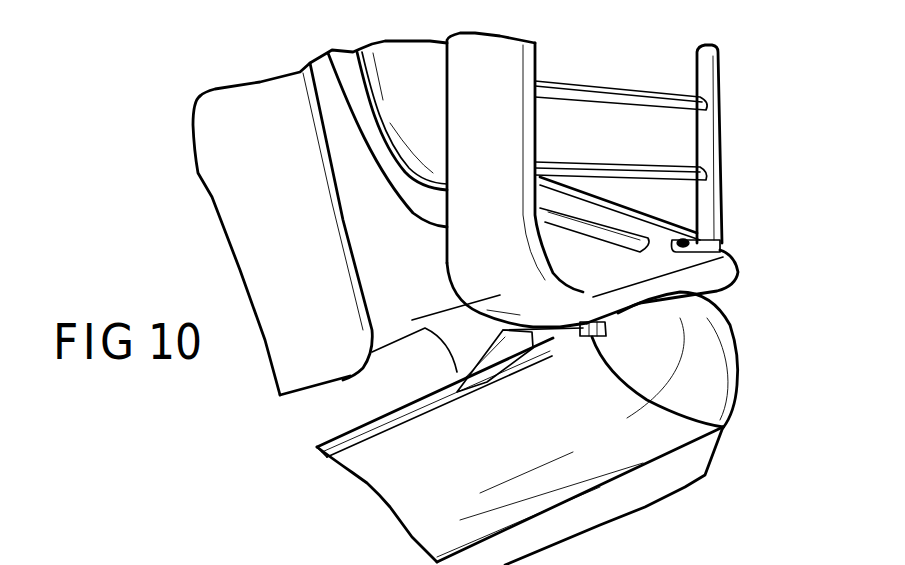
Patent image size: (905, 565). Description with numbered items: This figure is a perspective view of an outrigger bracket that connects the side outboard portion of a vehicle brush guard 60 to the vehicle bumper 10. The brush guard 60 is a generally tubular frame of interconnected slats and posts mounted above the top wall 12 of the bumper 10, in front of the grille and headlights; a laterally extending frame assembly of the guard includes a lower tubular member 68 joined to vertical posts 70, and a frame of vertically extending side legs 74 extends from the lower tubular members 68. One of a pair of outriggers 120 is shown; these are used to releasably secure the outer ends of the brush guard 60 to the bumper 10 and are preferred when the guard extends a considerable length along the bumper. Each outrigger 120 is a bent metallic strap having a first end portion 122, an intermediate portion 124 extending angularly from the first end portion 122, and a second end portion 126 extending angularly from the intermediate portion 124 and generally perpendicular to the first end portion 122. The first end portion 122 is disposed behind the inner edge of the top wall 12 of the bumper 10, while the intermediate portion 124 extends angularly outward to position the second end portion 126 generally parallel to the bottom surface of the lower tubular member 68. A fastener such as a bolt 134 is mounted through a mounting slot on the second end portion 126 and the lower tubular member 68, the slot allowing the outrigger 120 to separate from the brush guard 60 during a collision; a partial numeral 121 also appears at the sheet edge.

The vehicle bumper 10 is at (516, 502).
The top wall 12 is at (372, 460).
The vehicle brush guard 60 is at (500, 147).
The lower tubular member 68 is at (653, 287).
The vertical post 70 is at (503, 283).
The side leg 74 is at (713, 213).
The outrigger 120 is at (450, 370).
The side panel 121 is at (196, 554).
The first end portion 122 is at (441, 418).
The intermediate portion 124 is at (470, 331).
The second end portion 126 is at (537, 328).
The bolt 134 is at (687, 393).